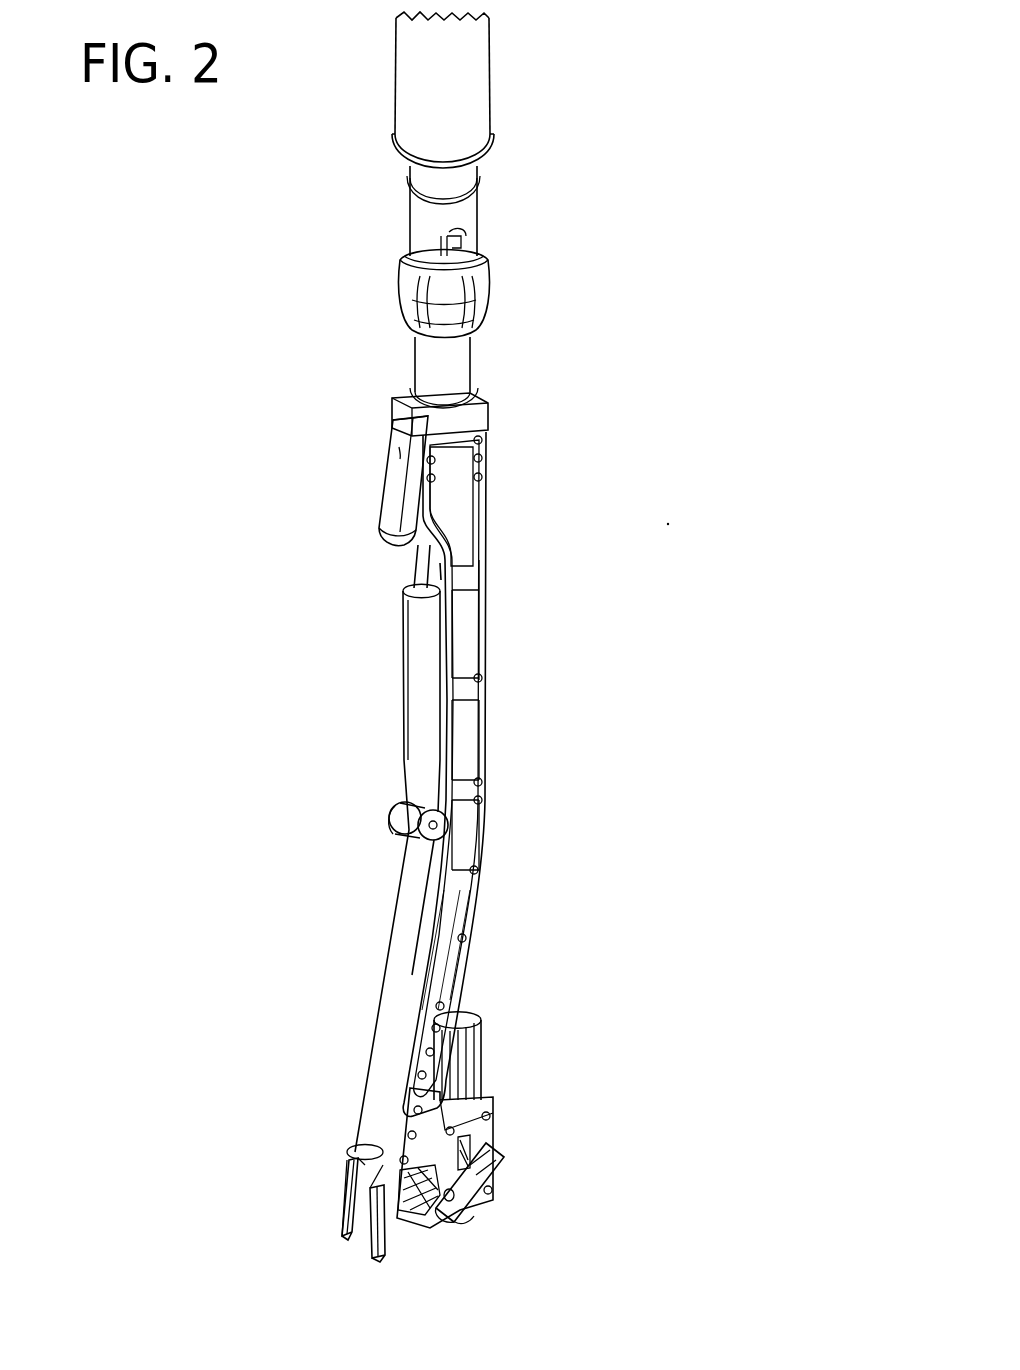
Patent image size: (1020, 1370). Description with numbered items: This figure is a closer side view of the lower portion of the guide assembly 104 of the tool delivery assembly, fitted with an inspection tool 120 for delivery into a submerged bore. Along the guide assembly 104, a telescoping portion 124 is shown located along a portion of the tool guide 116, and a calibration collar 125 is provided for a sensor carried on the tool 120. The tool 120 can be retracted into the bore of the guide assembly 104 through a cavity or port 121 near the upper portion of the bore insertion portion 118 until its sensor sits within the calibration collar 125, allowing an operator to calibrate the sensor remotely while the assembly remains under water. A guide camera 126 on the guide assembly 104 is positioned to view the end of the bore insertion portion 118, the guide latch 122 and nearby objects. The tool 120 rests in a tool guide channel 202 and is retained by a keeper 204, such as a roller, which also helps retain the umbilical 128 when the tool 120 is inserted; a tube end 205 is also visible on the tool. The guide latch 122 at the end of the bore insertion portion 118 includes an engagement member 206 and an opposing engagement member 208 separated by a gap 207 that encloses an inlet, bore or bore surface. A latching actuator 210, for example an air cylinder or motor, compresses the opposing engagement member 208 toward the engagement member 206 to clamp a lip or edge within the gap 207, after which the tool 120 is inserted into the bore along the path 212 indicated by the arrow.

The guide assembly 104 is at (606, 167).
The tool guide 116 is at (490, 85).
The telescoping portion 124 is at (483, 154).
The calibration collar 125 is at (470, 345).
The guide camera 126 is at (385, 488).
The cavity or port 121 is at (448, 512).
The tool guide channel 202 is at (442, 563).
The umbilical 128 is at (418, 565).
The tube end 205 is at (410, 620).
The tool 120 is at (410, 708).
The keeper 204 is at (392, 812).
The bore insertion portion 118 is at (486, 830).
The latching actuator 210 is at (482, 1048).
The guide latch 122 is at (494, 1197).
The opposing engagement member 208 is at (430, 1248).
The gap 207 is at (399, 1244).
The engagement member 206 is at (378, 1263).
The path 212 is at (365, 1155).